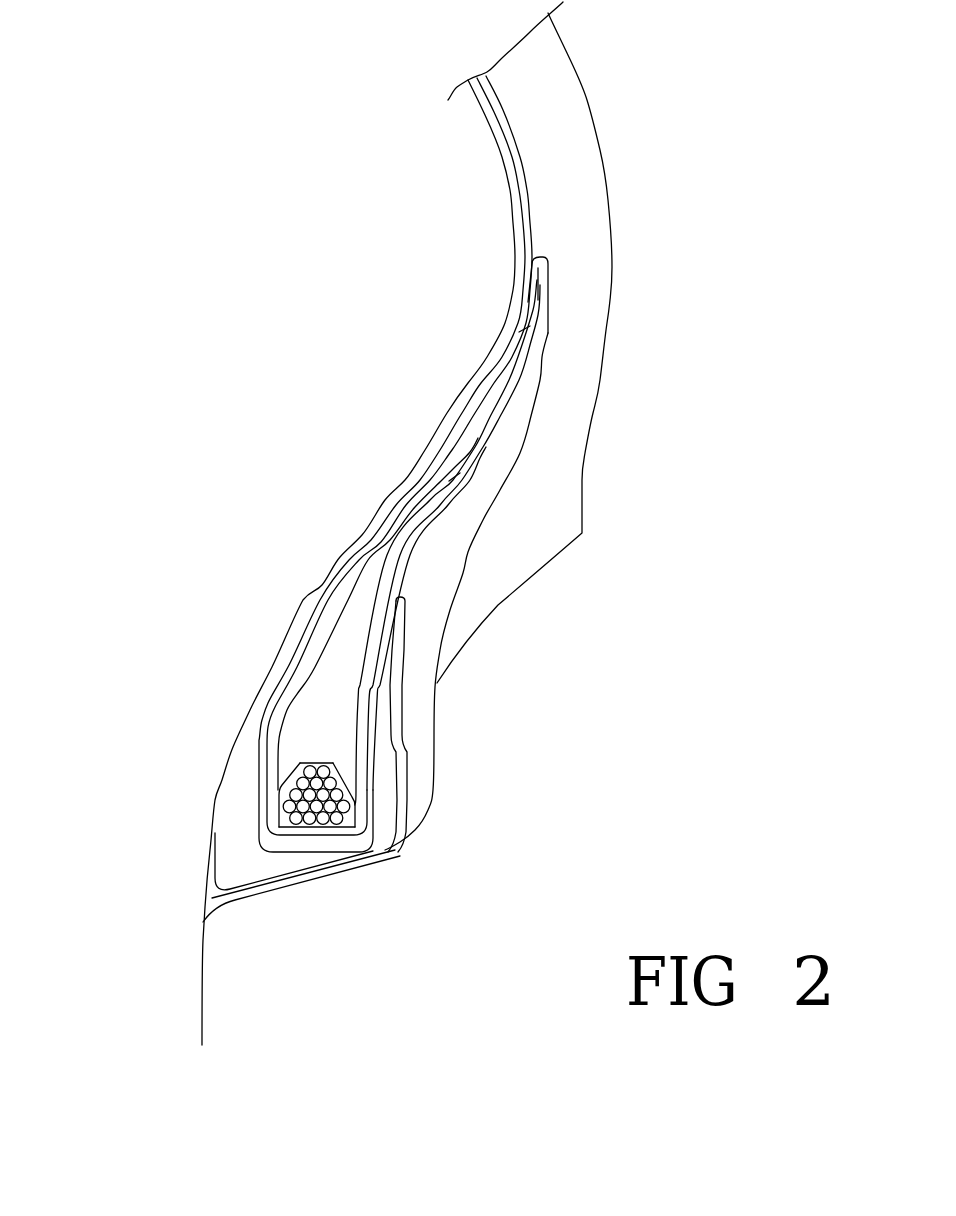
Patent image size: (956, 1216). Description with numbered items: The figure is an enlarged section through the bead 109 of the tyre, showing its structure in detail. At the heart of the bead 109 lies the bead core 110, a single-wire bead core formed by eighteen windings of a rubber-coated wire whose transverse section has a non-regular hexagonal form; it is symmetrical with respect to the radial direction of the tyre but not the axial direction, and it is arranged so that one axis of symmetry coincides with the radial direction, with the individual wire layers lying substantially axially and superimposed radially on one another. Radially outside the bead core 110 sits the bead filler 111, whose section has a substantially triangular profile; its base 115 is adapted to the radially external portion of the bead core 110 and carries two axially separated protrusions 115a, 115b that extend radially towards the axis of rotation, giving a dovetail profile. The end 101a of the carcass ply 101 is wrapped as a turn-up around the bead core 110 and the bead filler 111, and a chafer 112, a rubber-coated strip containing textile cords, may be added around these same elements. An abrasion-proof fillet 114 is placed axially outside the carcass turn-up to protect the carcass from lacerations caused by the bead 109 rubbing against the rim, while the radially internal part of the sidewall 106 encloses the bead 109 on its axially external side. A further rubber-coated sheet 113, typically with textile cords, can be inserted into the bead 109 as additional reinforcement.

The bead 109 is at (133, 253).
The carcass ply 101 is at (527, 180).
The end of the carcass ply 101a is at (535, 310).
The abrasion-proof fillet 114 is at (512, 430).
The sidewall 106 is at (558, 508).
The bead filler 111 is at (333, 693).
The chafer 112 is at (390, 582).
The base of the bead filler 115 is at (318, 762).
The first protrusion 115a is at (283, 763).
The second protrusion 115b is at (348, 768).
The bead core 110 is at (328, 805).
The rubber-coated sheet 113 is at (262, 892).